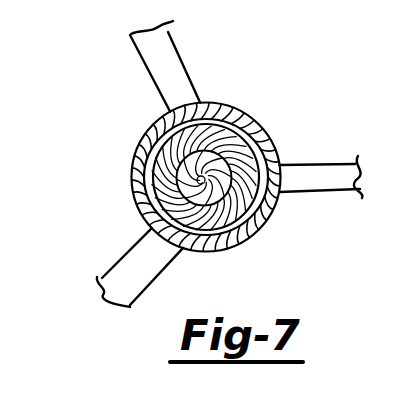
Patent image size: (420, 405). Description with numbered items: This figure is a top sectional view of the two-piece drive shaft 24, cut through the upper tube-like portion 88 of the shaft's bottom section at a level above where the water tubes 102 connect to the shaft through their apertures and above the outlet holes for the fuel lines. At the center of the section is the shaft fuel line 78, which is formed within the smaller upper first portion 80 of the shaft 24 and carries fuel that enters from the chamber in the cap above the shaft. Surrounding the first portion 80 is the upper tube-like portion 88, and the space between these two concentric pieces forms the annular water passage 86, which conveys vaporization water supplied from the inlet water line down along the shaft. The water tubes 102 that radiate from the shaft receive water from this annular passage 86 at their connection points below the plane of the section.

The two-piece drive shaft 24 is at (268, 128).
The shaft fuel line 78 is at (204, 177).
The first portion 80 is at (219, 226).
The annular water line 86 is at (160, 127).
The upper tube-like portion 88 is at (236, 114).
The water tubes 102 is at (181, 59).